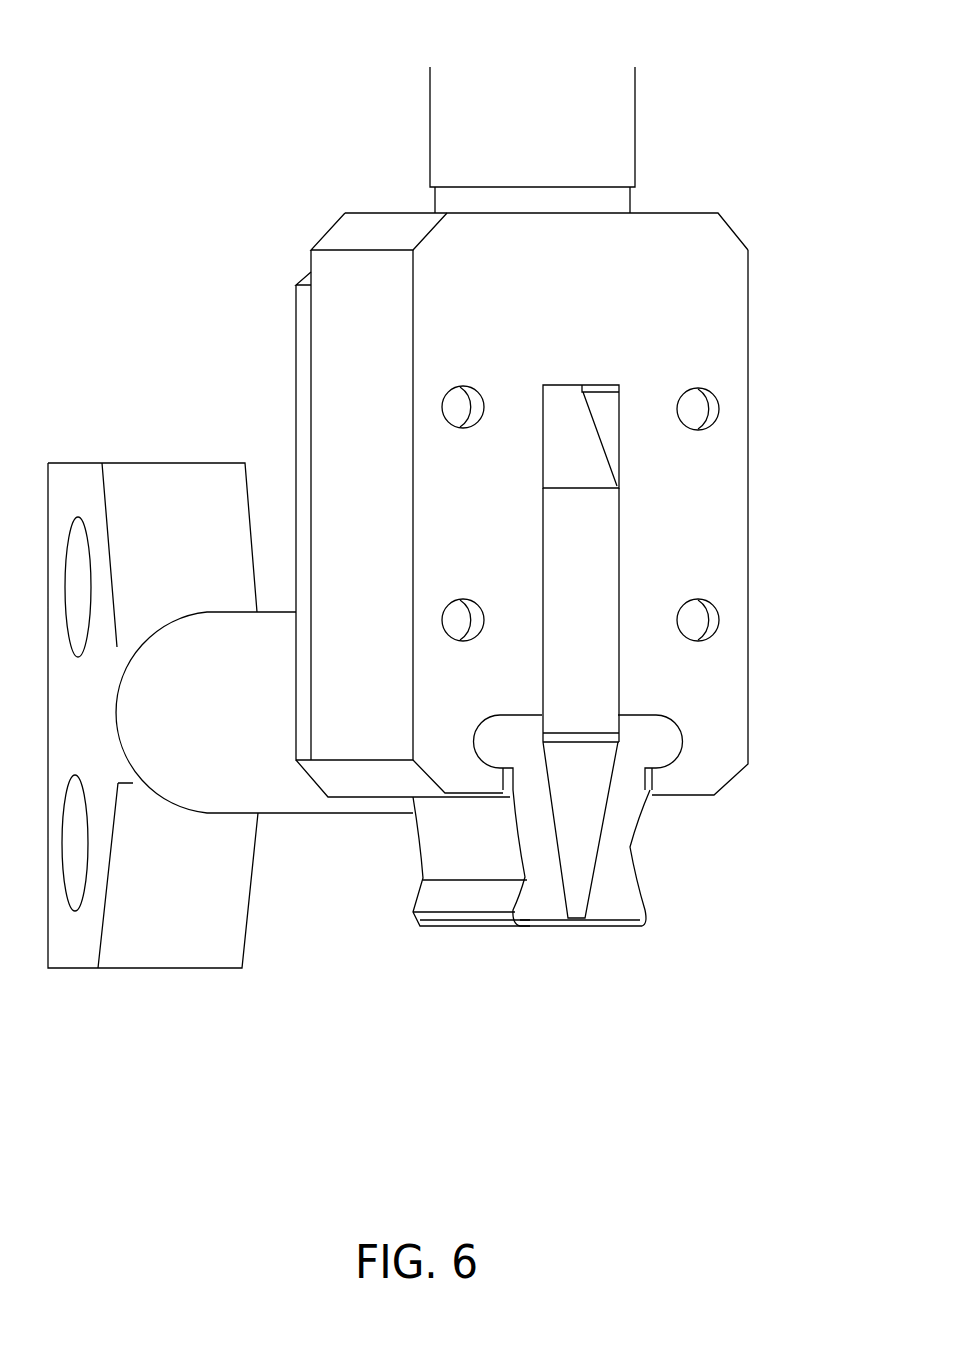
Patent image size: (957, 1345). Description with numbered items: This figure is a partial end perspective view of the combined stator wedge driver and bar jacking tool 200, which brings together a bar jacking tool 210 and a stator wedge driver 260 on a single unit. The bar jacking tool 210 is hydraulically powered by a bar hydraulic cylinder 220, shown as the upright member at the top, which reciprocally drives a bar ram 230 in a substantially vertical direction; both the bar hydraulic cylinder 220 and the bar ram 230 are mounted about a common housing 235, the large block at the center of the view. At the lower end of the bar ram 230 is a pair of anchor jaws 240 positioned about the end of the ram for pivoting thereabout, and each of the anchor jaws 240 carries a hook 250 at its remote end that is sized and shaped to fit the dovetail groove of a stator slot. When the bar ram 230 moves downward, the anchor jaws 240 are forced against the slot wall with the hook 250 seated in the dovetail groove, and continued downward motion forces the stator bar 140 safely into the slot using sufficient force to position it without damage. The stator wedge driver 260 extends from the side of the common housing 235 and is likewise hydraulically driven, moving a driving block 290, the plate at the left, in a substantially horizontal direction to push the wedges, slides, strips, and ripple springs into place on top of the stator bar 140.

The combined stator wedge driver and bar jacking tool 200 is at (687, 45).
The bar jacking tool 210 is at (753, 256).
The bar hydraulic cylinder 220 is at (628, 145).
The bar ram 230 is at (550, 402).
The common housing 235 is at (742, 472).
The stator bar 140 is at (603, 563).
The anchor jaws 240 is at (630, 848).
The hook 250 is at (638, 905).
The stator wedge driver 260 is at (271, 826).
The driving block 290 is at (163, 463).